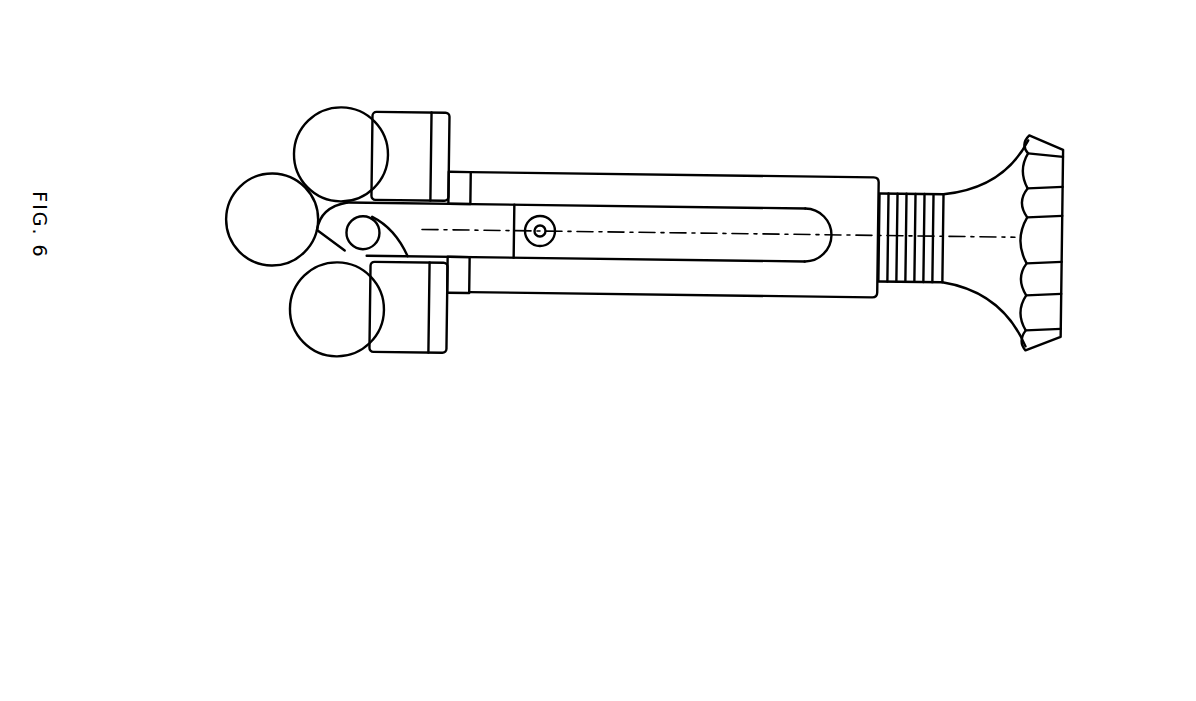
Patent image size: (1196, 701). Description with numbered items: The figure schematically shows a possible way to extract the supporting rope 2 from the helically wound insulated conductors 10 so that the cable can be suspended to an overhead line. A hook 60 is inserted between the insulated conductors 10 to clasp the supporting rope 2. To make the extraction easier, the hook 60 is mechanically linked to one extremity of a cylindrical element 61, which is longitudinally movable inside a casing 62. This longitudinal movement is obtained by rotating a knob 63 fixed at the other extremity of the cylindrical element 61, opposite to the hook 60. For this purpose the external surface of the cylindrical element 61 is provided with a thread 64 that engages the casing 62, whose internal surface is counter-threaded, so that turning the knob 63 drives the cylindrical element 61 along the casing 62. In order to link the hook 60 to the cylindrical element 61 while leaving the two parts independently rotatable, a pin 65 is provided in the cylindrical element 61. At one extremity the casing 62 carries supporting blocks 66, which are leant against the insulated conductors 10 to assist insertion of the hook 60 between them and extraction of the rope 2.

The supporting rope 2 is at (352, 253).
The insulated conductors 10 is at (318, 108).
The hook 60 is at (448, 218).
The cylindrical element 61 is at (785, 223).
The casing 62 is at (658, 183).
The knob 63 is at (1047, 240).
The thread 64 is at (922, 260).
The pin 65 is at (540, 246).
The supporting blocks 66 is at (408, 127).